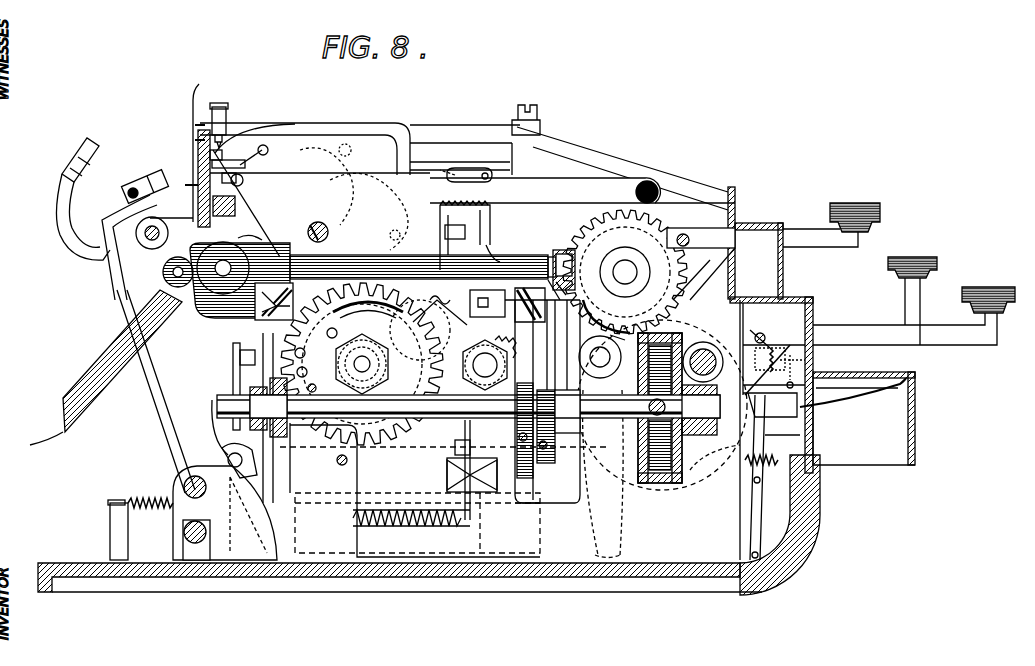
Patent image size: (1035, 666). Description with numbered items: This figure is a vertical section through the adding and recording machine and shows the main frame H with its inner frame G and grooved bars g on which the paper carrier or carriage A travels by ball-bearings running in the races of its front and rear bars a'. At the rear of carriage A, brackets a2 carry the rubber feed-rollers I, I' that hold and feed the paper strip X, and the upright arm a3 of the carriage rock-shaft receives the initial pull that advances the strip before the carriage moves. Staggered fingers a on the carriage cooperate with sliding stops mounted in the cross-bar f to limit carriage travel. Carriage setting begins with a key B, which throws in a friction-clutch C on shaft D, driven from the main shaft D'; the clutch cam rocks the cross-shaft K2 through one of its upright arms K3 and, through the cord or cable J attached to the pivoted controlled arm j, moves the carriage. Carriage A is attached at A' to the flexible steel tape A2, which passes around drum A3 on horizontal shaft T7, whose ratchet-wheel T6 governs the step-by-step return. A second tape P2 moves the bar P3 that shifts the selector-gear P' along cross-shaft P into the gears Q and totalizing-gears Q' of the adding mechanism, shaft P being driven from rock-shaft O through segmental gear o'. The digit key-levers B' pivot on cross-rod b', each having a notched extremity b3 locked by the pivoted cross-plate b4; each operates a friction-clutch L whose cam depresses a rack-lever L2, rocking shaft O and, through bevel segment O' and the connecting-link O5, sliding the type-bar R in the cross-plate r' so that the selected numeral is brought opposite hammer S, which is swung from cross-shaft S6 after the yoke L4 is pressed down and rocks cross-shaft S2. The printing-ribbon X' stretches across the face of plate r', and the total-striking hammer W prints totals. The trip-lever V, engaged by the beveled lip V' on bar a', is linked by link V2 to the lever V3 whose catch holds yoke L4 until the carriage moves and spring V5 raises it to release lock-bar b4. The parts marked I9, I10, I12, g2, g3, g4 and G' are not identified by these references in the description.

The main frame H is at (670, 563).
The paper carrier or carriage A is at (315, 190).
The paper strip X is at (180, 153).
The cross-plate r' is at (187, 178).
The sliding type-bar R is at (194, 135).
The printing-ribbon X' is at (183, 191).
The connecting-link O5 is at (223, 116).
The totalizing-gears Q' is at (239, 180).
The hammer S is at (92, 150).
The total-striking hammer W is at (135, 228).
The cross-shaft S6 is at (137, 238).
The fingers a is at (373, 273).
The feed-roller I is at (223, 260).
The feed-roller I' is at (178, 256).
The gears Q is at (247, 235).
The brackets or extensions a2 is at (165, 292).
The cord or cable J is at (582, 190).
The pivoted controlled arm j is at (456, 183).
The upright arm a3 is at (483, 235).
The cross-bar f is at (562, 249).
The projecting lip V' is at (558, 278).
The friction-clutch C is at (649, 272).
The shaft D is at (625, 272).
The keys B is at (831, 215).
The key-levers B' is at (914, 301).
The friction-clutch member L is at (774, 349).
The cross-rod b' is at (765, 327).
The notched extremity b3 is at (814, 366).
The pivoted cross-plate b4 is at (770, 403).
The rack-levers L2 is at (857, 418).
The pivoted yoke L4 is at (782, 435).
The pivoted lever V3 is at (760, 430).
The spring V5 is at (763, 469).
The link V2 is at (658, 474).
The trip-lever V is at (606, 316).
The main shaft D' is at (703, 354).
The gear housing I9 is at (645, 478).
The arm I10 is at (650, 472).
The arm I12 is at (715, 457).
The cross-shaft P is at (362, 364).
The inner frame G is at (428, 331).
The grooved bars g is at (298, 341).
The pin g3 is at (331, 329).
The pin g2 is at (307, 362).
The pin g4 is at (318, 381).
The bars a' is at (380, 313).
The segmental gear o' is at (441, 294).
The attachment point A' is at (514, 312).
The cross-shaft O is at (478, 363).
The bevel gear or segment O' is at (451, 383).
The ratchet-wheel T6 is at (232, 362).
The flexible steel tape A2 is at (468, 401).
The drum A3 is at (542, 319).
The cross-shaft K2 is at (600, 357).
The upright arms K3 is at (621, 330).
The selector-gear P' is at (415, 490).
The movable bar P3 is at (411, 486).
The coupling G' is at (461, 470).
The horizontal shaft T7 is at (447, 443).
The metallic tape P2 is at (527, 500).
The cross-shaft S2 is at (135, 508).